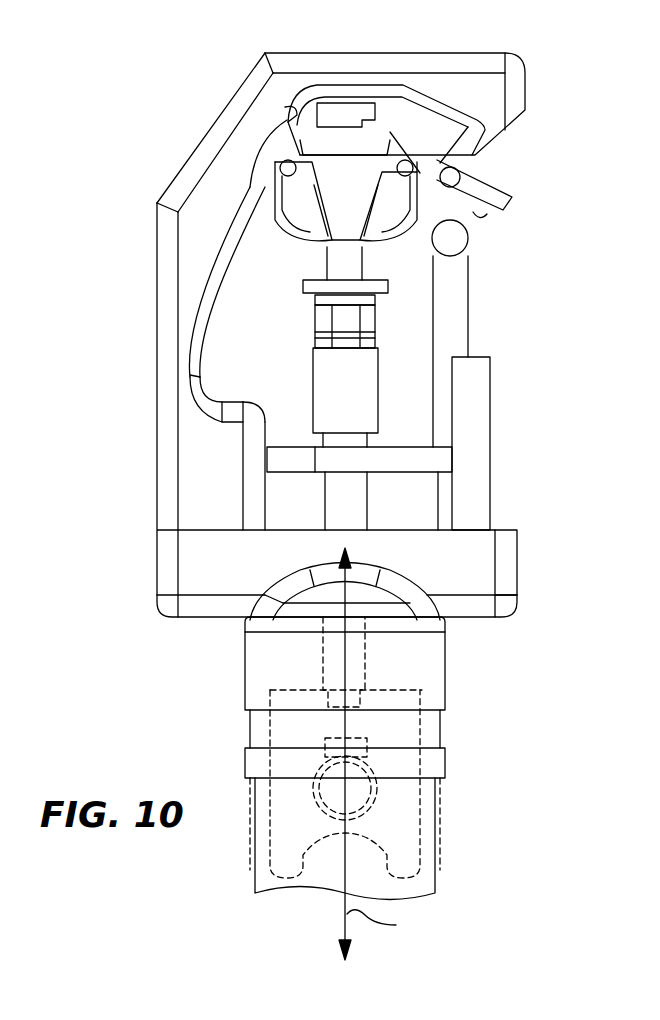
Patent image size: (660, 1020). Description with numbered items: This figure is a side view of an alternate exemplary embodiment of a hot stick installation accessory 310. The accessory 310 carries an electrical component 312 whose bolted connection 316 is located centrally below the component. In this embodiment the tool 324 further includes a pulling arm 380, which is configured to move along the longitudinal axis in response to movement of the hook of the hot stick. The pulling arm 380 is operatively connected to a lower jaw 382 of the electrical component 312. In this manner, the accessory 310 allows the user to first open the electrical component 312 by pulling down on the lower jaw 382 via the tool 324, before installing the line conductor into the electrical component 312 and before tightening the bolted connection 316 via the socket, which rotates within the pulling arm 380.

The hot stick installation accessory 310 is at (558, 103).
The electrical component 312 is at (340, 174).
The bolted connection 316 is at (303, 322).
The lower jaw 382 is at (482, 220).
The pulling arm 380 is at (468, 297).
The tool 324 is at (507, 393).